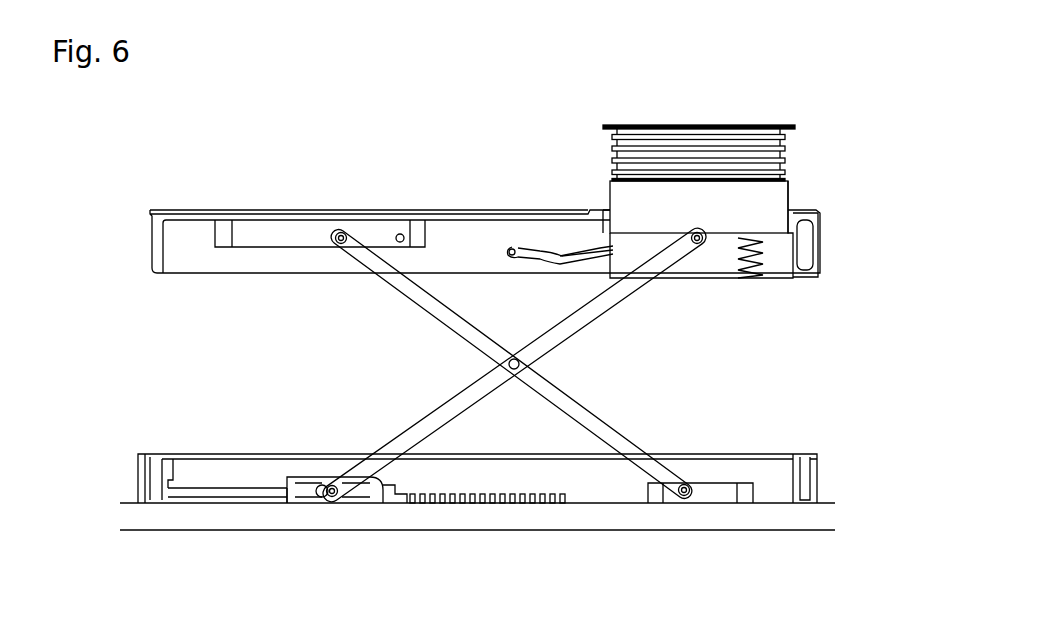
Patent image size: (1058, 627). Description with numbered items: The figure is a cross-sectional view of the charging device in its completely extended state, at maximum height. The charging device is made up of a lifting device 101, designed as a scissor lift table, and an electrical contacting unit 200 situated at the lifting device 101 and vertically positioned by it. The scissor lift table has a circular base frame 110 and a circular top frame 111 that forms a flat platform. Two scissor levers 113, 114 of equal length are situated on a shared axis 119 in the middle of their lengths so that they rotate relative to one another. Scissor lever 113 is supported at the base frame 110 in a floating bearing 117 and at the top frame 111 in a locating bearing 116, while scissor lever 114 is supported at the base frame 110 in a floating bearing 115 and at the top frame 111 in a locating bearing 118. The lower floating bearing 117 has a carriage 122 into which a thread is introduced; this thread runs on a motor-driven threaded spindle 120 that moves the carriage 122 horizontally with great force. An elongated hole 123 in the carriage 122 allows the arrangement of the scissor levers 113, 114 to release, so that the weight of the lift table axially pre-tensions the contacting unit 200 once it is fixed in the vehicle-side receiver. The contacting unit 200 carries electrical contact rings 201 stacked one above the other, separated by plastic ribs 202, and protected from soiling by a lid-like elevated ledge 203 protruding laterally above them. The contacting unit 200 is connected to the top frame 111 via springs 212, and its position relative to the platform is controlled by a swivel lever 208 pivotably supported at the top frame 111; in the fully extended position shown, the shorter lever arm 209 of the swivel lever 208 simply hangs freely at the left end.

The lifting device 101 is at (280, 364).
The base frame 110 is at (143, 483).
The top frame 111 is at (157, 248).
The scissor lever 113 is at (448, 413).
The scissor lever 114 is at (612, 433).
The floating bearing 115 is at (691, 488).
The locating bearing 116 is at (703, 237).
The floating bearing 117 is at (331, 496).
The locating bearing 118 is at (339, 236).
The shared axis 119 is at (521, 365).
The threaded spindle 120 is at (225, 490).
The carriage 122 is at (368, 489).
The elongated hole 123 is at (318, 486).
The contacting unit 200 is at (641, 165).
The electrical contact rings 201 is at (745, 143).
The plastic ribs 202 is at (672, 138).
The elevated ledge 203 is at (637, 126).
The swivel lever 208 is at (585, 229).
The shorter lever arm 209 is at (557, 249).
The springs 212 is at (757, 258).